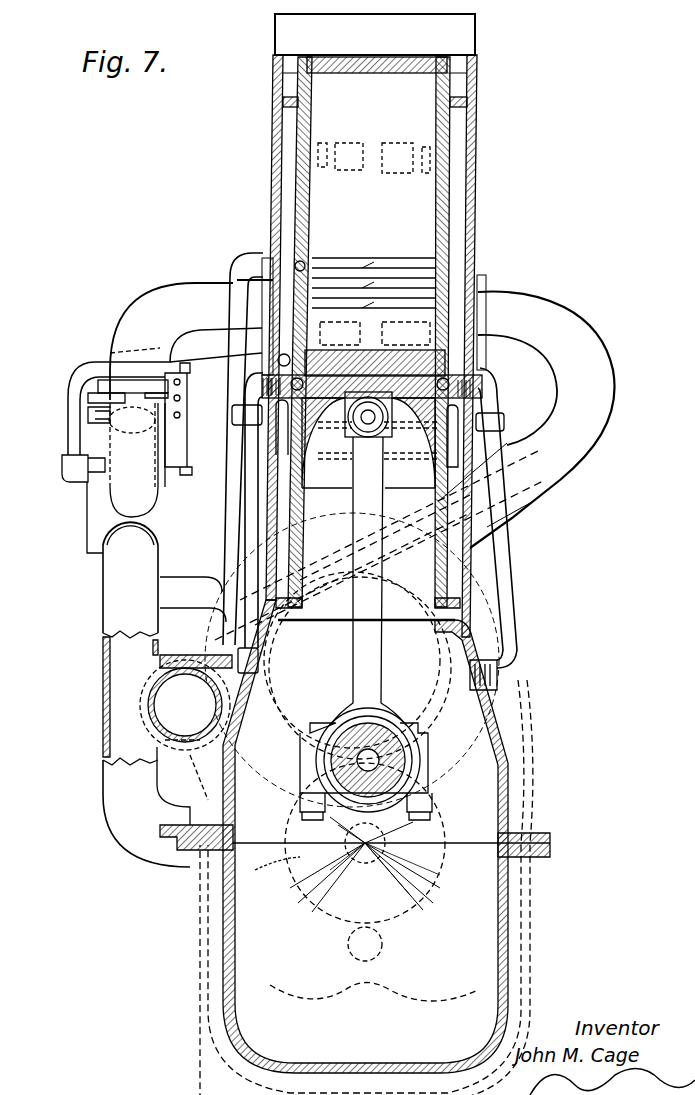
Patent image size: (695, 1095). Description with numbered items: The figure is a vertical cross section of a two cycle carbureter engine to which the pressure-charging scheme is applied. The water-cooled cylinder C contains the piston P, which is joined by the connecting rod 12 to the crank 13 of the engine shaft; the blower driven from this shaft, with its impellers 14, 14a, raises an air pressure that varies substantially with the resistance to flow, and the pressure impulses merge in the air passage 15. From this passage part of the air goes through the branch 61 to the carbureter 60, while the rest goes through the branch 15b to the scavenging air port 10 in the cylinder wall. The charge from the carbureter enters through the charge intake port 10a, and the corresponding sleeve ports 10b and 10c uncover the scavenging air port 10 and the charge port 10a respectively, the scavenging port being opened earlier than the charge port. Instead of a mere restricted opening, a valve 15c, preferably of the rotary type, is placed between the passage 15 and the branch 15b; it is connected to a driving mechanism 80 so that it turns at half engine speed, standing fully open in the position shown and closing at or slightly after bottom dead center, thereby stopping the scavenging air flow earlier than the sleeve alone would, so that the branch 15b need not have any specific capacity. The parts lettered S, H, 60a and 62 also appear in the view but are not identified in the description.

The cylinder C is at (456, 223).
The cylinder sleeve S is at (450, 197).
The combustion chamber H is at (374, 165).
The sleeve port 10c is at (340, 141).
The sleeve port 10b is at (427, 145).
The charge intake port 10a is at (362, 316).
The scavenging air port 10 is at (392, 318).
The piston P is at (373, 390).
The connecting rod 12 is at (368, 677).
The crank 13 is at (408, 777).
The driving mechanism 80 is at (377, 757).
The impeller 14a is at (420, 708).
The impeller 14 is at (515, 912).
The branch 15b is at (530, 480).
The intake manifold 62 is at (170, 463).
The carbureter 60 is at (79, 519).
The carburetor throttle 60a is at (152, 427).
The branch 61 is at (130, 643).
The valve 15c is at (170, 712).
The air passage 15 is at (155, 803).